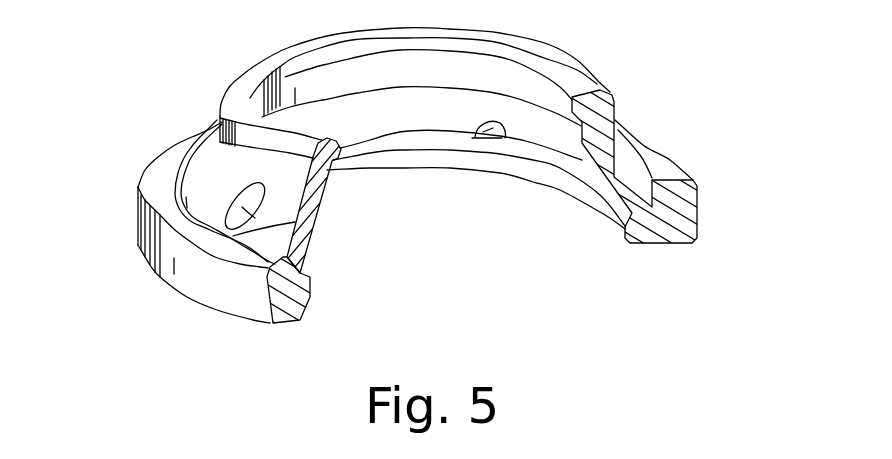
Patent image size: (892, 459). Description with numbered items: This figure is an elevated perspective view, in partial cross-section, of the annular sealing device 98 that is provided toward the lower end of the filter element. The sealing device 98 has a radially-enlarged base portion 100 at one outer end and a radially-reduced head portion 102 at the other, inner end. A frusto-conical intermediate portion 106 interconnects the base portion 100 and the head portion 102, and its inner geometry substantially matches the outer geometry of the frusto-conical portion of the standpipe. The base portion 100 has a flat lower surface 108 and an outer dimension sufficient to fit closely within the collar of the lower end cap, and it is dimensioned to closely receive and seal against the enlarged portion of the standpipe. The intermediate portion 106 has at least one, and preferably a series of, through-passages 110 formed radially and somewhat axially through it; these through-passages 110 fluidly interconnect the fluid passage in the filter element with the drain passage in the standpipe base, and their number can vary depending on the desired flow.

The annular sealing device 98 is at (137, 243).
The base portion 100 is at (690, 207).
The head portion 102 is at (597, 88).
The intermediate portion 106 is at (282, 224).
The flat lower surface 108 is at (650, 247).
The through-passages 110 is at (232, 226).